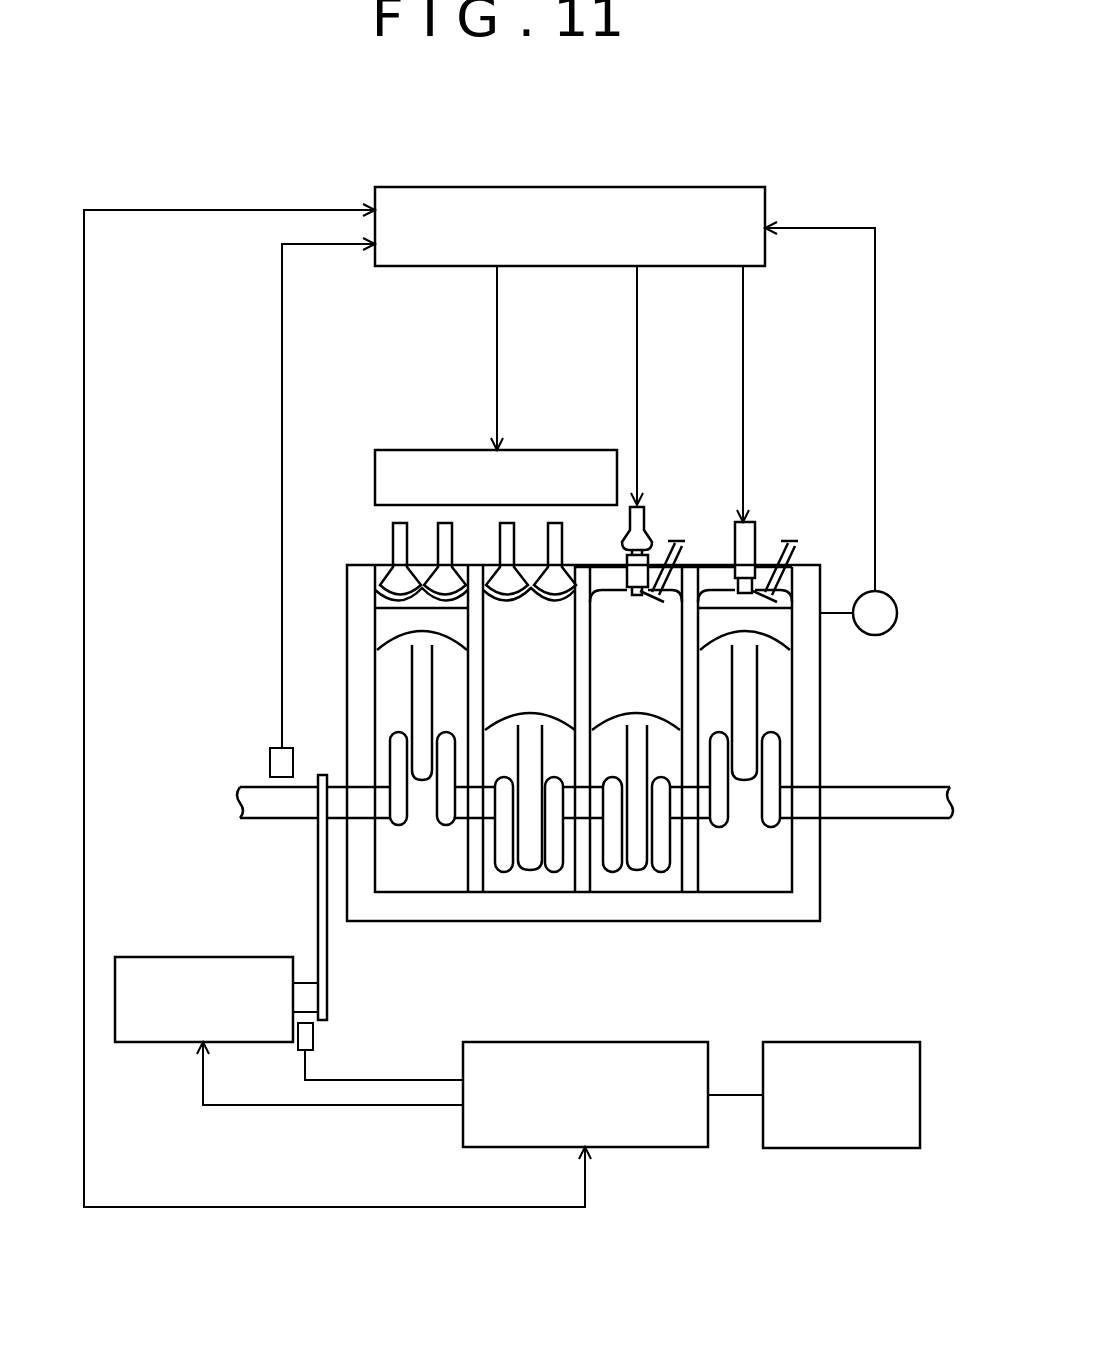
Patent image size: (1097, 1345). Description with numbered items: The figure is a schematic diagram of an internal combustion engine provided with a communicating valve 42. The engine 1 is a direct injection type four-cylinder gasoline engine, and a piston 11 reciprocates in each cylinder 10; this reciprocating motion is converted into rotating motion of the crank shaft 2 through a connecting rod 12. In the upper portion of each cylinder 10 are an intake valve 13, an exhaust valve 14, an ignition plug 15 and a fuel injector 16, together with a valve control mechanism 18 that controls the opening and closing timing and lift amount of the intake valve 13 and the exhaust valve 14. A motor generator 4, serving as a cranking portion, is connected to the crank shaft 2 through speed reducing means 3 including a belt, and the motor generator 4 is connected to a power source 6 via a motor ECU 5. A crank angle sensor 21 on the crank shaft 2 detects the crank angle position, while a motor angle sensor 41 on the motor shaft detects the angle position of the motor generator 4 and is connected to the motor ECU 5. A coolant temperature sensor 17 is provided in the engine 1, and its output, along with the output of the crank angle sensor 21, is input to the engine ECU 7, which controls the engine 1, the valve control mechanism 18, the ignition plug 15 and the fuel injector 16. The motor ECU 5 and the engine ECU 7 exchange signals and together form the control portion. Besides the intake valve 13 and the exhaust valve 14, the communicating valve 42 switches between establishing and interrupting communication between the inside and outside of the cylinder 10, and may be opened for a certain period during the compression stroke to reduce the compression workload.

The engine 1 is at (843, 735).
The crank shaft 2 is at (270, 808).
The speed reducing means 3 is at (318, 923).
The motor generator 4 is at (157, 1042).
The motor ECU 5 is at (648, 1042).
The power source 6 is at (858, 1042).
The engine ECU 7 is at (735, 188).
The cylinder 10 is at (377, 596).
The piston 11 is at (385, 621).
The connecting rod 12 is at (412, 692).
The intake valve 13 is at (392, 540).
The exhaust valve 14 is at (556, 548).
The ignition plug 15 is at (643, 520).
The fuel injector 16 is at (752, 550).
The coolant temperature sensor 17 is at (893, 596).
The valve control mechanism 18 is at (403, 450).
The crank angle sensor 21 is at (280, 760).
The motor angle sensor 41 is at (316, 1037).
The communicating valve 42 is at (688, 556).